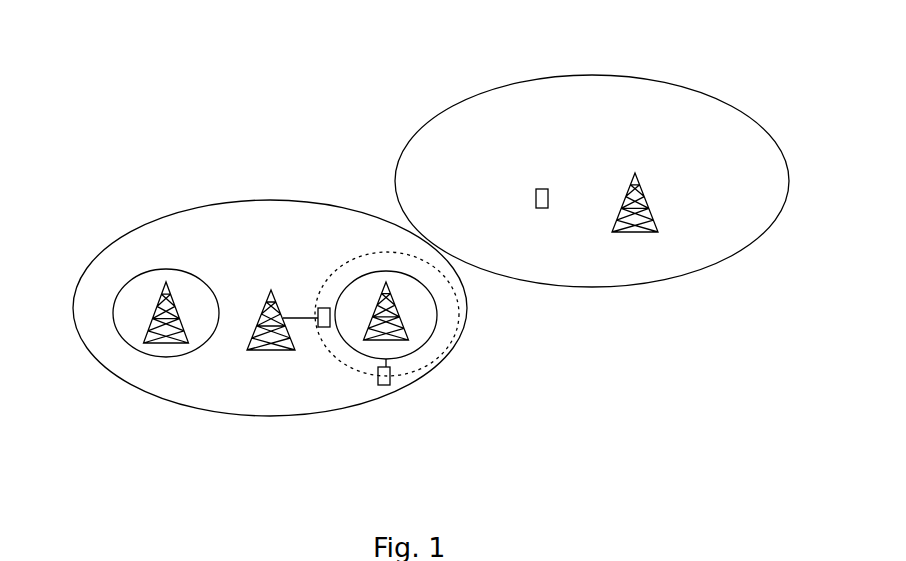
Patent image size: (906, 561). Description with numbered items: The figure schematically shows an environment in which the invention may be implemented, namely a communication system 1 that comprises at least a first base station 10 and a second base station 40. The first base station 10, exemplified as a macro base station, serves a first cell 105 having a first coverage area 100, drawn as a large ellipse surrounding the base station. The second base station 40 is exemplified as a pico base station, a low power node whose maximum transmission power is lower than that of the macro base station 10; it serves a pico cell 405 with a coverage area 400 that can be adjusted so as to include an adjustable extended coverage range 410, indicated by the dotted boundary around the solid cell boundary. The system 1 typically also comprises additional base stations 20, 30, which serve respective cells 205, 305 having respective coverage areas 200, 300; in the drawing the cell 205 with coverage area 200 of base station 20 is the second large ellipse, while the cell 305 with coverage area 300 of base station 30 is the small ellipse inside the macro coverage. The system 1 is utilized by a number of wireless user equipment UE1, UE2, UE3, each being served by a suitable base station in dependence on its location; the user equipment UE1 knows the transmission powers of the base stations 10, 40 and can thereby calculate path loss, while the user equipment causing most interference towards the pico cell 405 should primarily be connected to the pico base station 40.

The communication system 1 is at (477, 56).
The first coverage area 100 is at (163, 227).
The first cell 105 is at (221, 204).
The second coverage area 200 is at (740, 130).
The second cell 205 is at (608, 289).
The additional base station 20 is at (658, 223).
The wireless user equipment UE3 is at (536, 190).
The additional base station 30 is at (152, 298).
The coverage area 300 is at (127, 323).
The cell 305 is at (142, 358).
The first base station 10 is at (250, 343).
The wireless user equipment UE1 is at (318, 312).
The coverage area 400 is at (372, 280).
The second base station 40 is at (408, 335).
The pico cell 405 is at (437, 312).
The adjustable extended coverage range 410 is at (347, 355).
The wireless user equipment UE2 is at (390, 385).